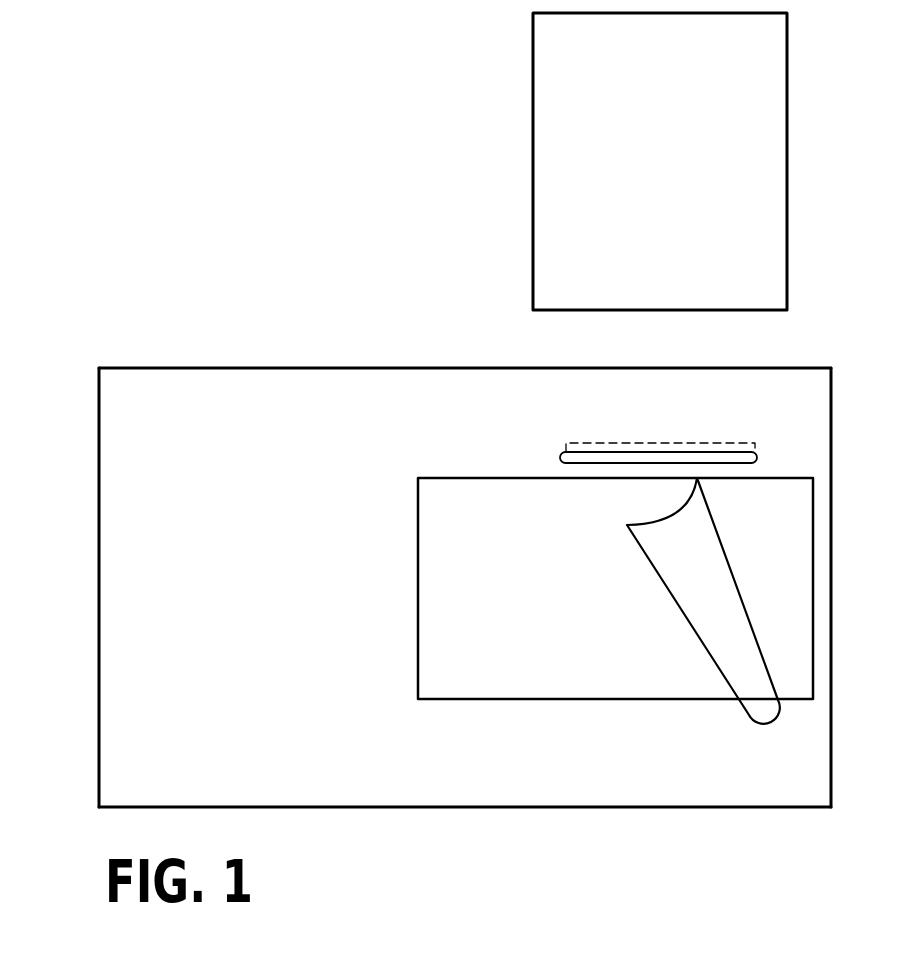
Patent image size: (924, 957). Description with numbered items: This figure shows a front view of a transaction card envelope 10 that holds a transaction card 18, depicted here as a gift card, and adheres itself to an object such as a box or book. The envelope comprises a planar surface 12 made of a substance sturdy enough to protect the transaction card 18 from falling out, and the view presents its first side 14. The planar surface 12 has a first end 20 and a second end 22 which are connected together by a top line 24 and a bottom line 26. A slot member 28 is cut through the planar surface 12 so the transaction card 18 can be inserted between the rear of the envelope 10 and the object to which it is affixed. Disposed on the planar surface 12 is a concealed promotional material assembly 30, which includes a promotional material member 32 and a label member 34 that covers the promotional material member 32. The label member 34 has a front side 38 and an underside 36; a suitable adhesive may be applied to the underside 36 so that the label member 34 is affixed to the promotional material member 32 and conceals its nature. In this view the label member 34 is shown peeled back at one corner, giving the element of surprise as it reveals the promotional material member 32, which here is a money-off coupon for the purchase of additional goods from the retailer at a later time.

The transaction card envelope 10 is at (157, 300).
The planar surface 12 is at (467, 583).
The first side 14 is at (210, 445).
The transaction card 18 is at (765, 113).
The first end 20 is at (99, 587).
The second end 22 is at (832, 513).
The top line 24 is at (423, 368).
The bottom line 26 is at (545, 808).
The slot member 28 is at (757, 458).
The concealed promotional material assembly 30 is at (468, 476).
The promotional material member 32 is at (793, 590).
The label member 34 is at (655, 682).
The underside 36 is at (645, 538).
The front side 38 is at (437, 583).